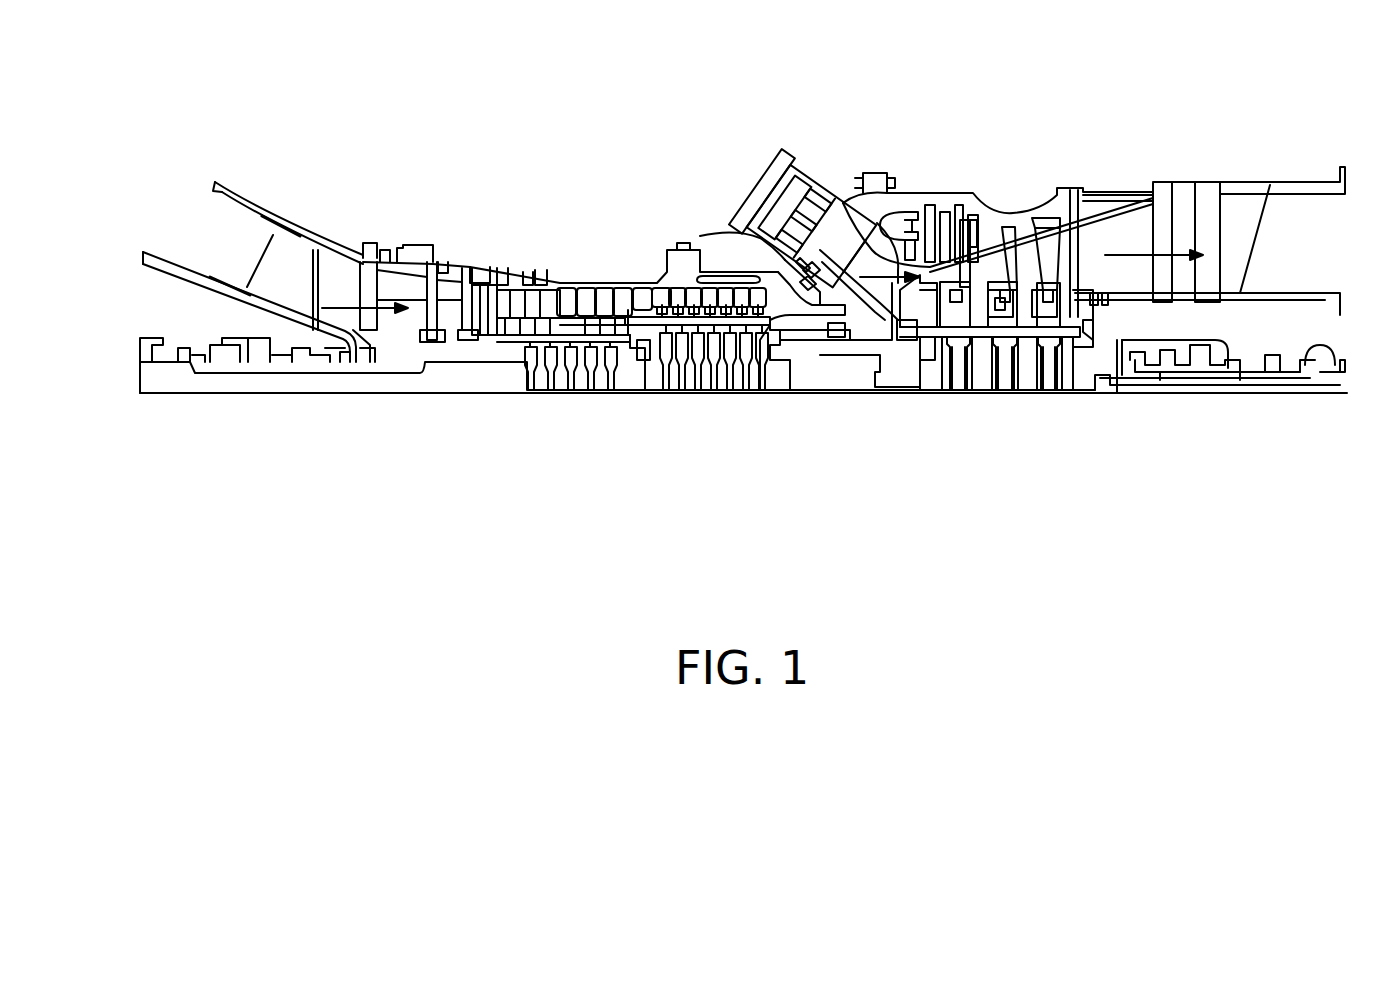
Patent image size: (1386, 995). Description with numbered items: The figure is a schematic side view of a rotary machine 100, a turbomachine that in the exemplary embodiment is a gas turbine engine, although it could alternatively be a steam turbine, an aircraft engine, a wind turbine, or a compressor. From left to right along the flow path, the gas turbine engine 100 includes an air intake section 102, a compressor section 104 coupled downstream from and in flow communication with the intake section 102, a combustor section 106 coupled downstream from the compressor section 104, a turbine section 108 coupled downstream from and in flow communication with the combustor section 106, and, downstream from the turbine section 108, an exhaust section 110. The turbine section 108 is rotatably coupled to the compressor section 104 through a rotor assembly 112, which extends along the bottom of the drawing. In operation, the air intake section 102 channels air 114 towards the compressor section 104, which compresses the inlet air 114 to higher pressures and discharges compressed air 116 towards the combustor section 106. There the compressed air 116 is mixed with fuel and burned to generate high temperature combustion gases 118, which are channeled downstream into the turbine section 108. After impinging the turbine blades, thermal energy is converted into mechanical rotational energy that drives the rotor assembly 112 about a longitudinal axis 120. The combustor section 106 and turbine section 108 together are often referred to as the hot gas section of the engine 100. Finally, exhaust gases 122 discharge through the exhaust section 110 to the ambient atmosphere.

The rotary machine 100 is at (1008, 82).
The air intake section 102 is at (222, 182).
The compressor section 104 is at (700, 395).
The combustor section 106 is at (806, 172).
The turbine section 108 is at (978, 395).
The exhaust section 110 is at (1250, 182).
The rotor assembly 112 is at (433, 395).
The air 114 is at (345, 280).
The compressed air 116 is at (735, 236).
The combustion gases 118 is at (885, 262).
The longitudinal axis 120 is at (1262, 393).
The exhaust gases 122 is at (1140, 248).